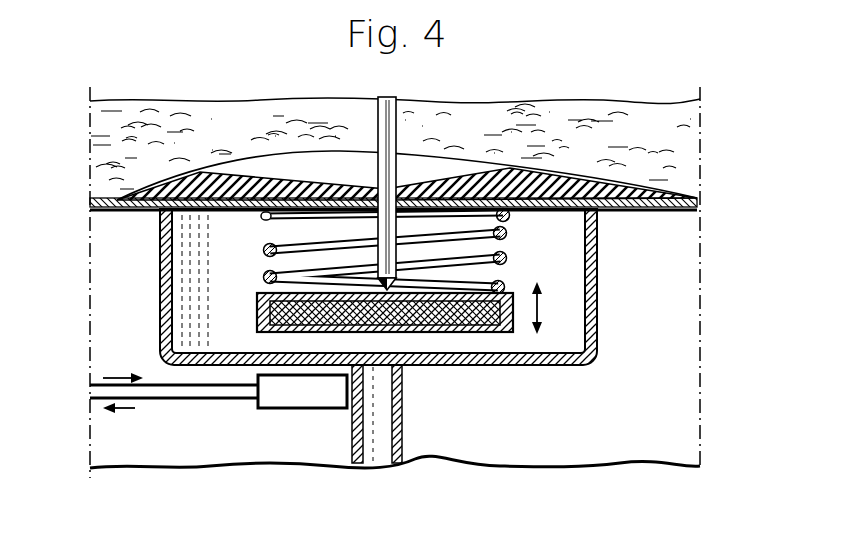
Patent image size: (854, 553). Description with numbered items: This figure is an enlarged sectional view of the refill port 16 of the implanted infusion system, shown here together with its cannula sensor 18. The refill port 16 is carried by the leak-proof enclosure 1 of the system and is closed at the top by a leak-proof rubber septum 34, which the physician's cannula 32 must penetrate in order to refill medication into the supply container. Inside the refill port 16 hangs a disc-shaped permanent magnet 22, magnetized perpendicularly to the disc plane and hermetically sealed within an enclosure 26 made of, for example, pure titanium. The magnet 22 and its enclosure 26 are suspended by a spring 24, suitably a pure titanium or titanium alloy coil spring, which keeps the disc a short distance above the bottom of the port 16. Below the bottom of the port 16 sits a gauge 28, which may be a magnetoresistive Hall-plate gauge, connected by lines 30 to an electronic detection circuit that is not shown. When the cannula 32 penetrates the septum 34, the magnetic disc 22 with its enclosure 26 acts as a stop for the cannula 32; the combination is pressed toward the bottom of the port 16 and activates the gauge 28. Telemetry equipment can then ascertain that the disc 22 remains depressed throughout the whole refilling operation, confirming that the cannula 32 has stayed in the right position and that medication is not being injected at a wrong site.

The enclosure 1 is at (697, 183).
The refill port 16 is at (600, 257).
The cannula sensor 18 is at (663, 323).
The permanent magnet 22 is at (257, 318).
The spring 24 is at (505, 240).
The enclosure 26 is at (257, 306).
The gauge 28 is at (312, 394).
The lines 30 is at (100, 425).
The cannula 32 is at (385, 140).
The septum 34 is at (443, 170).